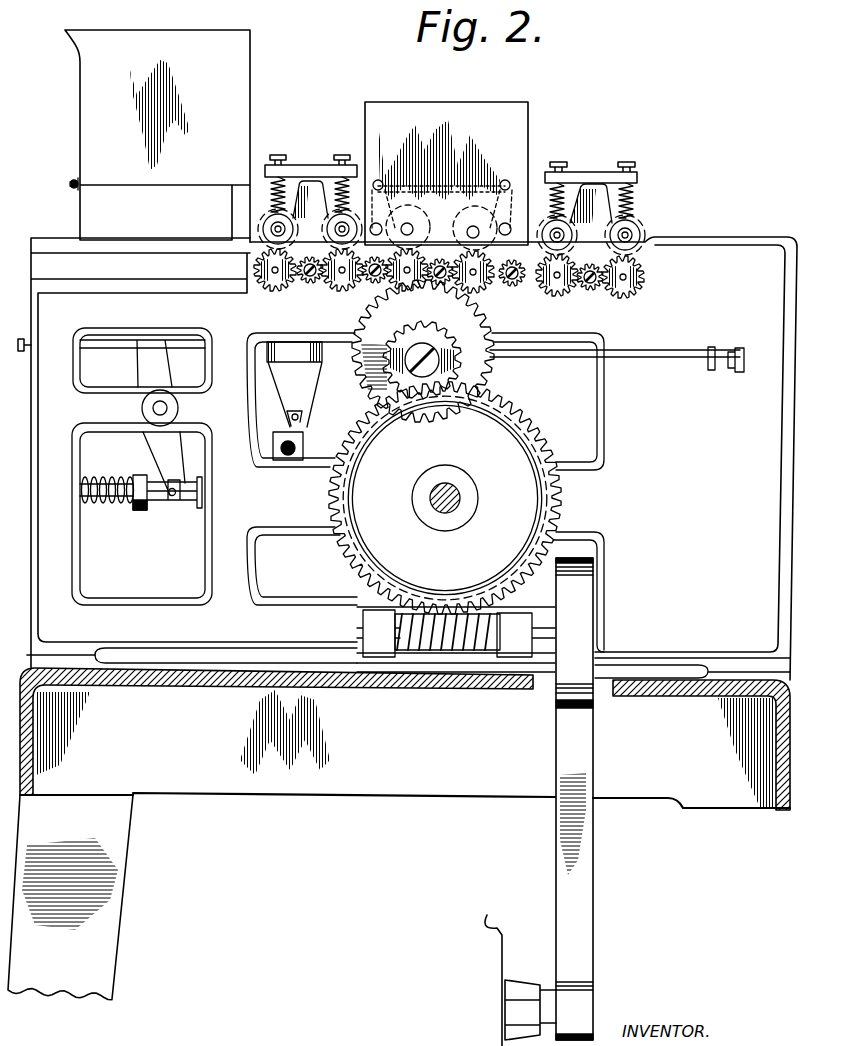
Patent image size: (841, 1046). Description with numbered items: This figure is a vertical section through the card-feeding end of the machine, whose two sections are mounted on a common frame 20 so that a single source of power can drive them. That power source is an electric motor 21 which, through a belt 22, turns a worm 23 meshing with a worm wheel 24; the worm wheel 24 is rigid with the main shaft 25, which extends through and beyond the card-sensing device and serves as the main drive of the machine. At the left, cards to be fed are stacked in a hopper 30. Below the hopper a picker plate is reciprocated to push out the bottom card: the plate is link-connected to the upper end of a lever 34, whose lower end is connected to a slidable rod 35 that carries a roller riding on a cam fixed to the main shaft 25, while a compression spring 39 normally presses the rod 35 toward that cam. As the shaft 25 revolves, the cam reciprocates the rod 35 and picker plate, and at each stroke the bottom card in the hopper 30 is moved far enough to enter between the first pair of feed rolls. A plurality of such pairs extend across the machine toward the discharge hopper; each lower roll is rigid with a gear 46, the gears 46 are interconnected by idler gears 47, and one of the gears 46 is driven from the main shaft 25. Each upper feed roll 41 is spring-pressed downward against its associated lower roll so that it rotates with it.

The frame 20 is at (277, 780).
The electric motor 21 is at (482, 918).
The belt 22 is at (583, 919).
The worm 23 is at (452, 653).
The worm wheel 24 is at (558, 507).
The main shaft 25 is at (455, 492).
The hopper 30 is at (245, 73).
The lever 34 is at (148, 366).
The slidable rod 35 is at (108, 495).
The compression spring 39 is at (100, 502).
The upper feed roll 41 is at (266, 226).
The gear 46 is at (628, 292).
The idler gear 47 is at (590, 290).